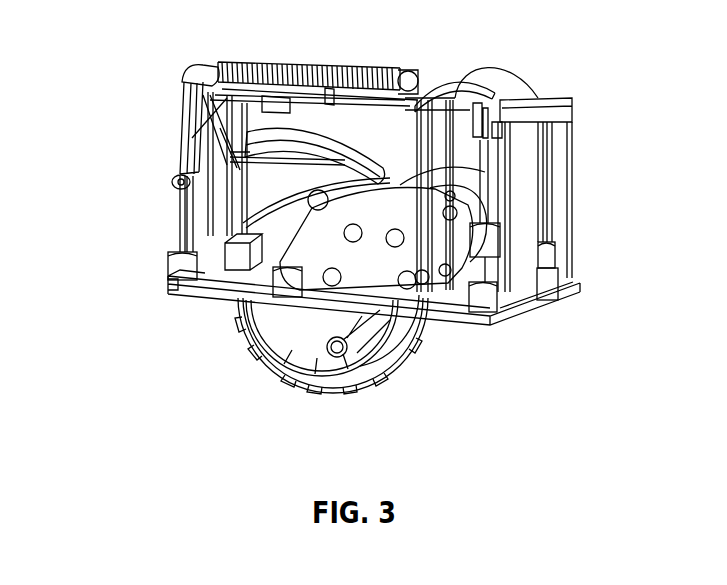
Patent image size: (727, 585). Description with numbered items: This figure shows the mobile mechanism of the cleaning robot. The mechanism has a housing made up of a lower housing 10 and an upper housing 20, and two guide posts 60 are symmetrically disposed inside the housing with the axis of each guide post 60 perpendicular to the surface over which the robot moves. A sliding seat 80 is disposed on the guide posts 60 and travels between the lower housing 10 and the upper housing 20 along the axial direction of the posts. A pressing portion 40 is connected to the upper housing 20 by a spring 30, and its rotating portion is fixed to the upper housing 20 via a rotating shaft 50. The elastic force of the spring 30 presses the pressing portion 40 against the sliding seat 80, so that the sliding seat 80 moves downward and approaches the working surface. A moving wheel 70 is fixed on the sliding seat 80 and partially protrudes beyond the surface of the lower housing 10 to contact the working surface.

The lower housing 10 is at (183, 290).
The upper housing 20 is at (522, 72).
The spring 30 is at (270, 62).
The pressing portion 40 is at (179, 110).
The rotating shaft 50 is at (172, 180).
The guide posts 60 is at (238, 233).
The moving wheel 70 is at (256, 345).
The sliding seat 80 is at (380, 247).